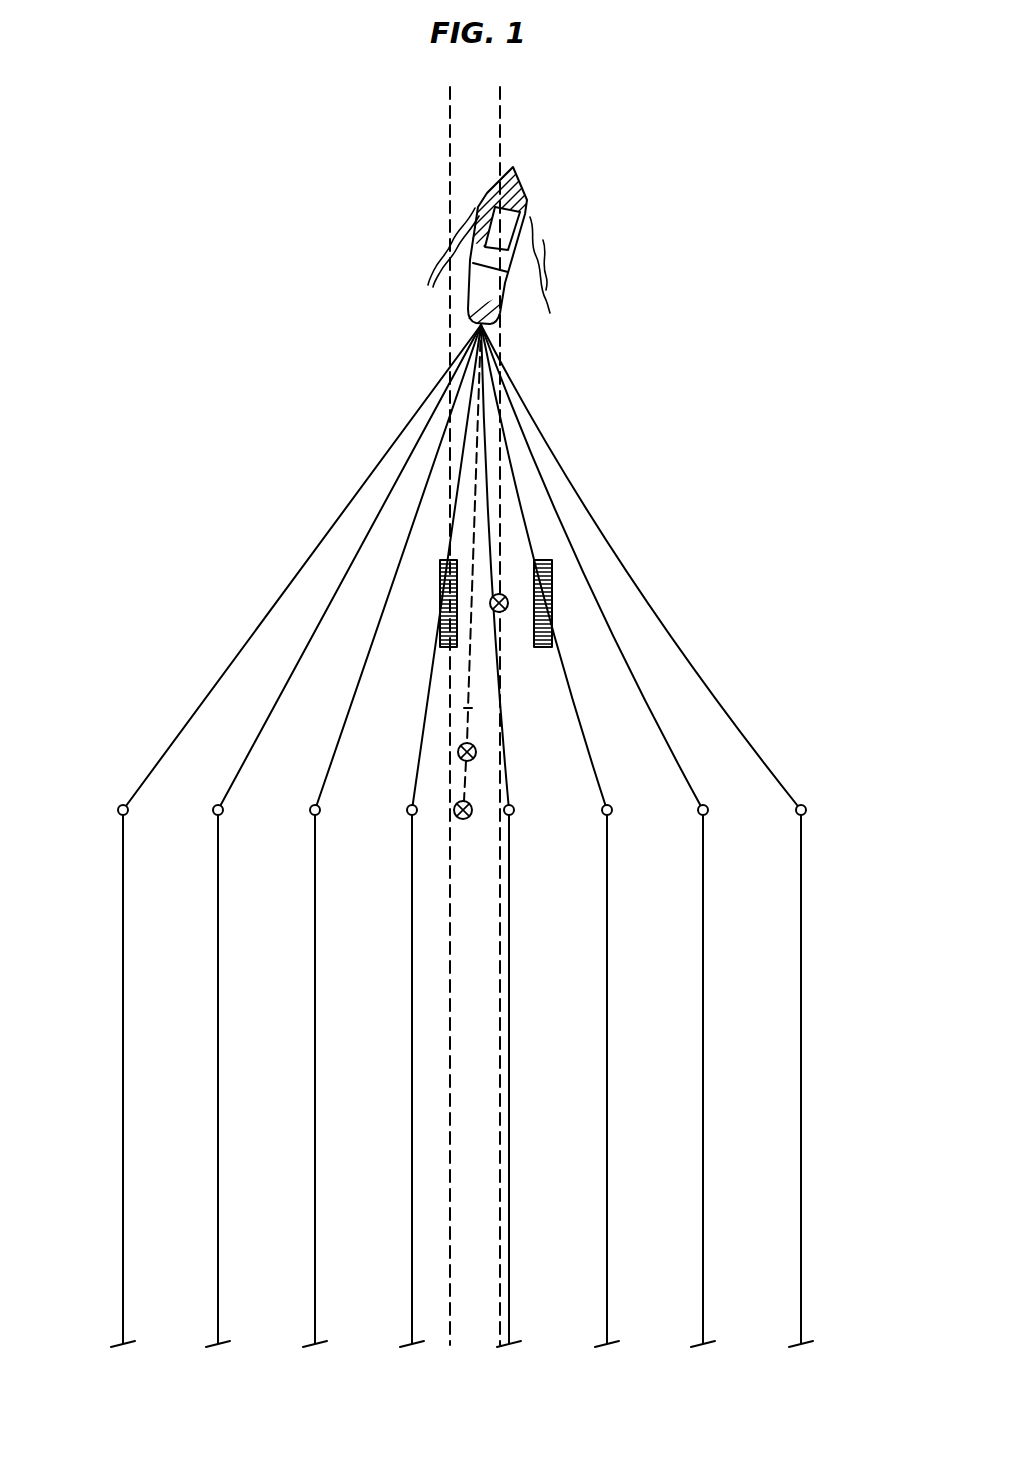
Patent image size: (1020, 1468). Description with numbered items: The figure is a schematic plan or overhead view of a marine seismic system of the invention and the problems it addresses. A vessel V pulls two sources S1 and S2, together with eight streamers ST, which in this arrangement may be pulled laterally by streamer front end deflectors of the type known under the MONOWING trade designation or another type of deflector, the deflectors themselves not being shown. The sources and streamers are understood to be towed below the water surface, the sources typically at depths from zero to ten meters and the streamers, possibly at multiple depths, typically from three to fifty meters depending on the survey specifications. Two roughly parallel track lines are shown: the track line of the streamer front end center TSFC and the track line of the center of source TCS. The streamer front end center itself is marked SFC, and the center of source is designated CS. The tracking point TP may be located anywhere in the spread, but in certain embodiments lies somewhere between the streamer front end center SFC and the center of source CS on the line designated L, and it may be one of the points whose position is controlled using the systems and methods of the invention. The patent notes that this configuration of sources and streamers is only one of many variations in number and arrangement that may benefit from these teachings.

The track line of the streamer front end center TSFC is at (449, 127).
The track line of the center of source TCS is at (501, 108).
The vessel V is at (528, 200).
The center of source CS is at (505, 596).
The first source S1 is at (552, 590).
The second source S2 is at (440, 632).
The line between streamer front end center and center of source L is at (466, 707).
The tracking point TP is at (473, 746).
The streamer front end center SFC is at (469, 817).
The streamers ST is at (218, 1103).